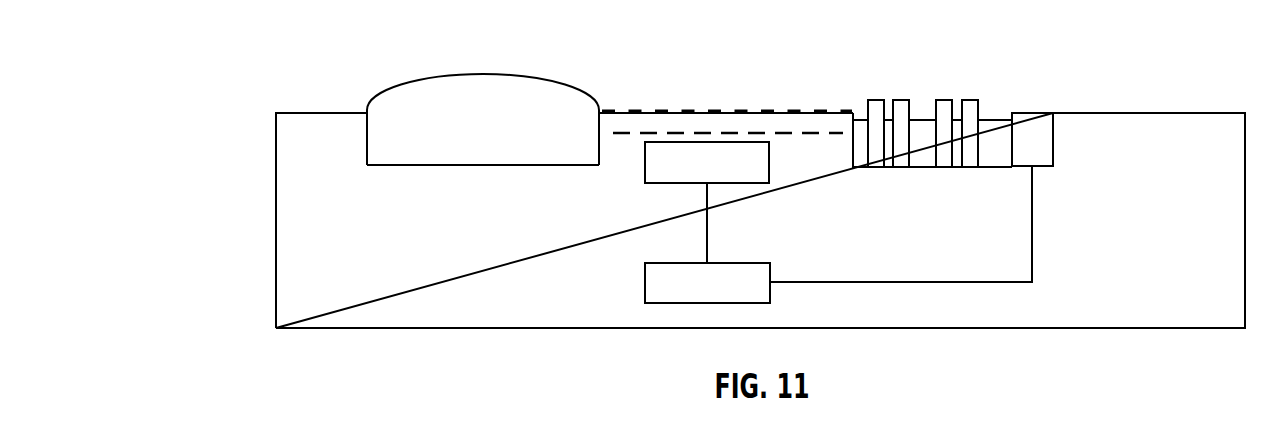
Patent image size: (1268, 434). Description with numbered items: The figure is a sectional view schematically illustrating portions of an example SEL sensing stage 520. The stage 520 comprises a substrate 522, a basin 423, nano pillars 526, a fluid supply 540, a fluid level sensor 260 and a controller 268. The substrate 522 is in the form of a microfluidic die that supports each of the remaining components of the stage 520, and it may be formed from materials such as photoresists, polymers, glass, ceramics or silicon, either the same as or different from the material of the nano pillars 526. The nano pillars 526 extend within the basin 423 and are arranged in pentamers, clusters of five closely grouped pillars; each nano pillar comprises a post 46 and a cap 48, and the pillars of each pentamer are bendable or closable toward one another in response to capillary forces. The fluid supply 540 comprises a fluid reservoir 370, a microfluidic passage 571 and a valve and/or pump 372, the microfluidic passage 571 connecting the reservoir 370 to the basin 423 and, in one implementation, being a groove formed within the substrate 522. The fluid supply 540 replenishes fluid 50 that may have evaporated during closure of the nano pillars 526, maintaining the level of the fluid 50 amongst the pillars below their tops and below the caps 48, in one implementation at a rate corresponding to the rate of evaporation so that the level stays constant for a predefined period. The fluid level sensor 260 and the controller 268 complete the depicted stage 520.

The SEL sensing stage 520 is at (342, 39).
The substrate 522 is at (276, 222).
The fluid supply 540 is at (518, 65).
The fluid reservoir 370 is at (367, 142).
The valve and/or pump 372 is at (645, 162).
The microfluidic passage 571 is at (712, 111).
The cap 48 is at (875, 100).
The fluid 50 is at (925, 119).
The post 46 is at (910, 142).
The nano pillars 526 is at (989, 106).
The basin 423 is at (1000, 122).
The fluid level sensor 260 is at (1030, 113).
The controller 268 is at (645, 283).